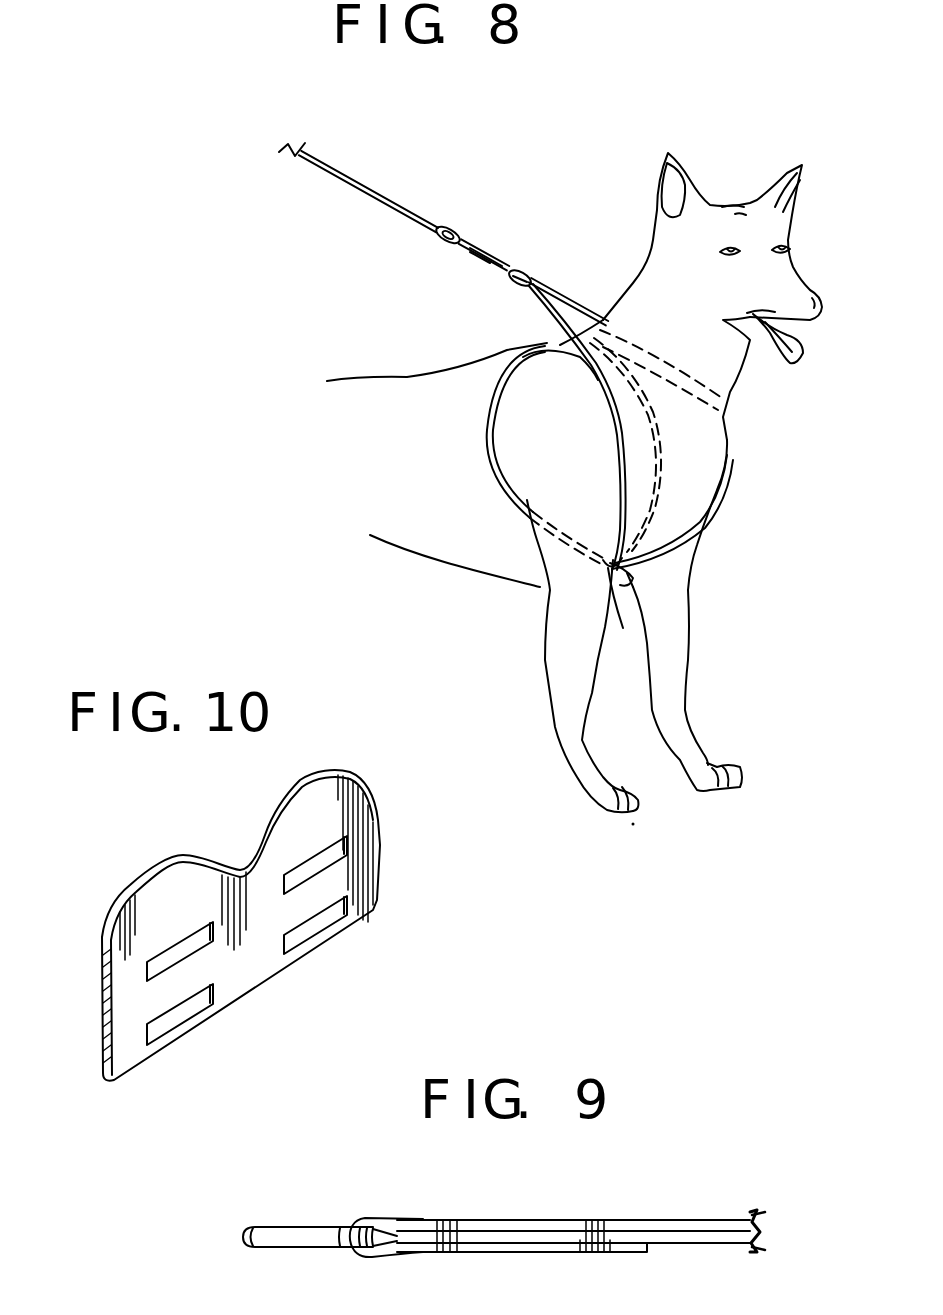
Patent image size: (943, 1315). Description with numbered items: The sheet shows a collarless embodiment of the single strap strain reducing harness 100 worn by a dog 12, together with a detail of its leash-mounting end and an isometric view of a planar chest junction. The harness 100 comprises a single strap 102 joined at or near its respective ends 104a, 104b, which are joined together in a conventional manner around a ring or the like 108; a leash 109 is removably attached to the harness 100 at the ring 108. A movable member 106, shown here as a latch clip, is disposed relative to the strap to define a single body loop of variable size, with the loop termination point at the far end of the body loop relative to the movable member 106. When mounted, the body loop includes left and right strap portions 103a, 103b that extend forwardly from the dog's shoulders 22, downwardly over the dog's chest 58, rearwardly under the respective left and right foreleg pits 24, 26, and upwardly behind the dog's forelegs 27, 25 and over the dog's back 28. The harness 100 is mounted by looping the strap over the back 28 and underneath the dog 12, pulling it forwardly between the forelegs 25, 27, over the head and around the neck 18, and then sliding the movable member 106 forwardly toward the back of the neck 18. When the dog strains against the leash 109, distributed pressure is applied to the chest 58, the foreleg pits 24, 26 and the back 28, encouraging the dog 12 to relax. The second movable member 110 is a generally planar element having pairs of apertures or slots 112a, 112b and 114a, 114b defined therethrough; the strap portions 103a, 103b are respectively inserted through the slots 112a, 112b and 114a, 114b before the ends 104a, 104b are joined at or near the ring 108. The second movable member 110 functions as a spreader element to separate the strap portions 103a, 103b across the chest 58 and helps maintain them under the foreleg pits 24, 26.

In FIG. 8, the dog 12 is at (440, 553).
In FIG. 8, the neck 18 is at (720, 376).
In FIG. 8, the shoulders 22 is at (543, 348).
In FIG. 8, the left foreleg pit 24 is at (642, 588).
In FIG. 8, the right foreleg 25 is at (680, 687).
In FIG. 8, the right foreleg pit 26 is at (620, 612).
In FIG. 8, the left foreleg 27 is at (553, 693).
In FIG. 8, the back 28 is at (397, 377).
In FIG. 8, the chest 58 is at (707, 453).
In FIG. 8, the harness 100 is at (484, 246).
In FIG. 8, the single strap 102 is at (700, 517).
In FIG. 9, the single strap 102 is at (717, 1227).
In FIG. 8, the left strap portion 103a is at (590, 312).
In FIG. 8, the right strap portion 103b is at (613, 427).
In FIG. 9, the strap end 104a is at (400, 1235).
In FIG. 9, the strap end 104b is at (644, 1254).
In FIG. 8, the movable member 106 is at (510, 280).
In FIG. 8, the ring 108 is at (443, 237).
In FIG. 9, the ring 108 is at (263, 1228).
In FIG. 8, the leash 109 is at (357, 182).
In FIG. 10, the second movable member 110 is at (378, 834).
In FIG. 10, the slot 112a is at (153, 965).
In FIG. 10, the slot 112b is at (177, 1020).
In FIG. 10, the slot 114a is at (333, 847).
In FIG. 10, the slot 114b is at (313, 930).